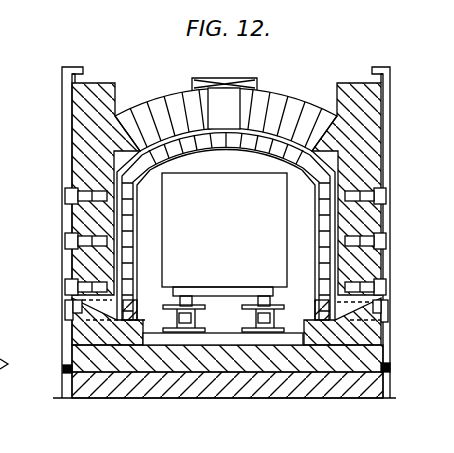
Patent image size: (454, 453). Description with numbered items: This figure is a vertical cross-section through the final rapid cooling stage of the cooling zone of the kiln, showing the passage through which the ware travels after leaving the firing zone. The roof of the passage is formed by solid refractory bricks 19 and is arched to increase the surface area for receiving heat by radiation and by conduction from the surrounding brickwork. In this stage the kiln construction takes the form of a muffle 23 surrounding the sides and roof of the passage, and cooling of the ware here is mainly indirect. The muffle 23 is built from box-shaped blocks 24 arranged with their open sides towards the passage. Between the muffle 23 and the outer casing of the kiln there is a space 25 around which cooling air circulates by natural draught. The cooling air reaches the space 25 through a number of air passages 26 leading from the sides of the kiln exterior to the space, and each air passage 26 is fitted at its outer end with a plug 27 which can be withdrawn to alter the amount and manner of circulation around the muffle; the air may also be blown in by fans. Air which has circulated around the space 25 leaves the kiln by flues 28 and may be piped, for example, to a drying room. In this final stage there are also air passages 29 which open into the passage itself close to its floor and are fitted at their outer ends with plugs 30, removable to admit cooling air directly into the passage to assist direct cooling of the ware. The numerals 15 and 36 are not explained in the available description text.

The furnace 15 is at (14, 364).
The solid refractory bricks 19 is at (279, 112).
The muffle 23 is at (171, 141).
The box-shaped blocks 24 is at (253, 146).
The space 25 is at (334, 222).
The air passages 26 is at (108, 238).
The plug 27 is at (66, 243).
The flues 28 is at (226, 102).
The air passages 29 is at (88, 332).
The plugs 30 is at (66, 312).
The furnace shell 36 is at (0, 262).